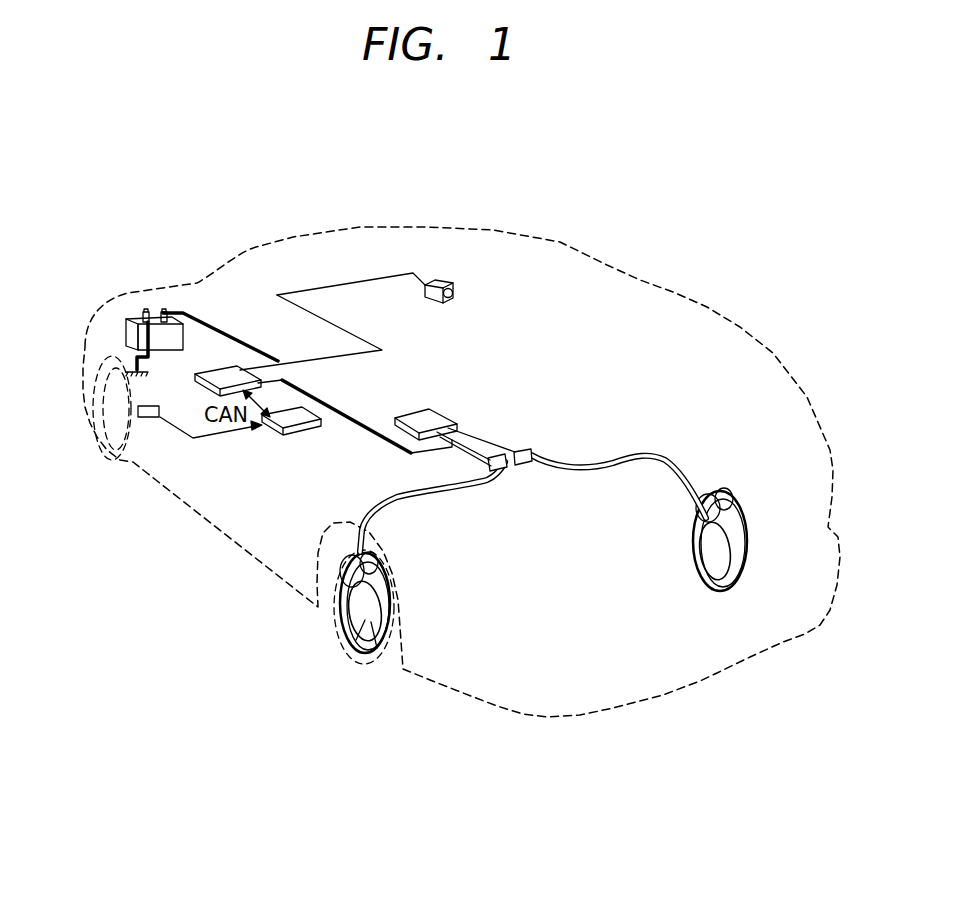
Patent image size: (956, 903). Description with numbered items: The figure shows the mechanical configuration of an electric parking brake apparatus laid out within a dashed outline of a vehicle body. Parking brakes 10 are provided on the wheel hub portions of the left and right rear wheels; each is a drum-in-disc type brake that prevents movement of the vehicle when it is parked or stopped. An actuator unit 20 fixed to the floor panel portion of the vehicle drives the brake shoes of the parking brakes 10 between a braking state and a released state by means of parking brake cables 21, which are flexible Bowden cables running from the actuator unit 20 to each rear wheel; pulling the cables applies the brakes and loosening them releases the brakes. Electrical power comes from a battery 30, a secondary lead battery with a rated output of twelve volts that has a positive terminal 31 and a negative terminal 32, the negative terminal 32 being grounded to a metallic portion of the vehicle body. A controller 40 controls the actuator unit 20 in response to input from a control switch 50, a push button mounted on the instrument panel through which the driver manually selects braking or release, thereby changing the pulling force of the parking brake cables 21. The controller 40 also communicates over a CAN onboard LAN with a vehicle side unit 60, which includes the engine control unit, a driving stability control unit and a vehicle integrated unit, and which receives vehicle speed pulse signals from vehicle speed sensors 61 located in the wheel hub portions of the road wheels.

The parking brake 10 is at (710, 550).
The actuator unit 20 is at (431, 422).
The parking brake cable 21 is at (452, 487).
The battery 30 is at (127, 333).
The positive terminal 31 is at (164, 310).
The negative terminal 32 is at (145, 313).
The controller 40 is at (197, 373).
The control switch 50 is at (436, 281).
The vehicle side unit 60 is at (302, 435).
The vehicle speed sensor 61 is at (152, 417).